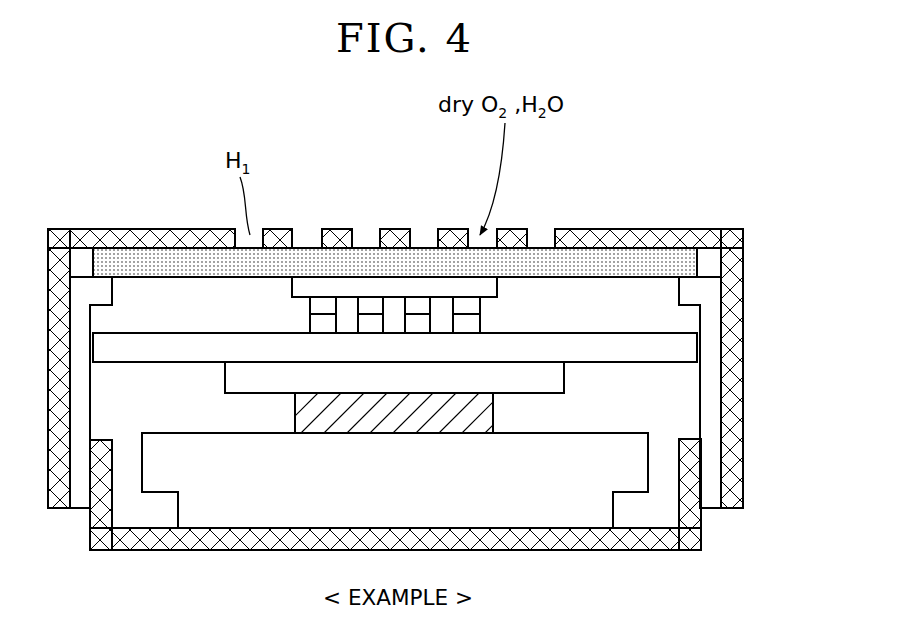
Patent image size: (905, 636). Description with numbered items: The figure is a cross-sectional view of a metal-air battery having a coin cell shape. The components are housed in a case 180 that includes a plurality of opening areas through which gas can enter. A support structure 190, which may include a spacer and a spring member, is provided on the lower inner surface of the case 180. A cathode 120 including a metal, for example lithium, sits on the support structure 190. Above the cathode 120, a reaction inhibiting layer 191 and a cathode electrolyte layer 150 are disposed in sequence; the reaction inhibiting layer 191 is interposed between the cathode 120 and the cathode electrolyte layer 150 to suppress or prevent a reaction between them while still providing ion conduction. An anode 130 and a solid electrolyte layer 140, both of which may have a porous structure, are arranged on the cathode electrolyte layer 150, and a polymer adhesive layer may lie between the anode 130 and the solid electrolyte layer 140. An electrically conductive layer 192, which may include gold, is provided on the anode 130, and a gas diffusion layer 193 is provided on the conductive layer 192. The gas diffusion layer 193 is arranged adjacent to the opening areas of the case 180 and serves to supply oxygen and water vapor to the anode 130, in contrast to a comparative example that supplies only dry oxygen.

The cathode 120 is at (483, 413).
The anode 130 is at (480, 307).
The solid electrolyte layer 140 is at (480, 326).
The cathode electrolyte layer 150 is at (684, 345).
The case 180 is at (175, 225).
The support structure 190 is at (633, 464).
The reaction inhibiting layer 191 is at (560, 376).
The conductive layer 192 is at (297, 288).
The gas diffusion layer 193 is at (687, 263).